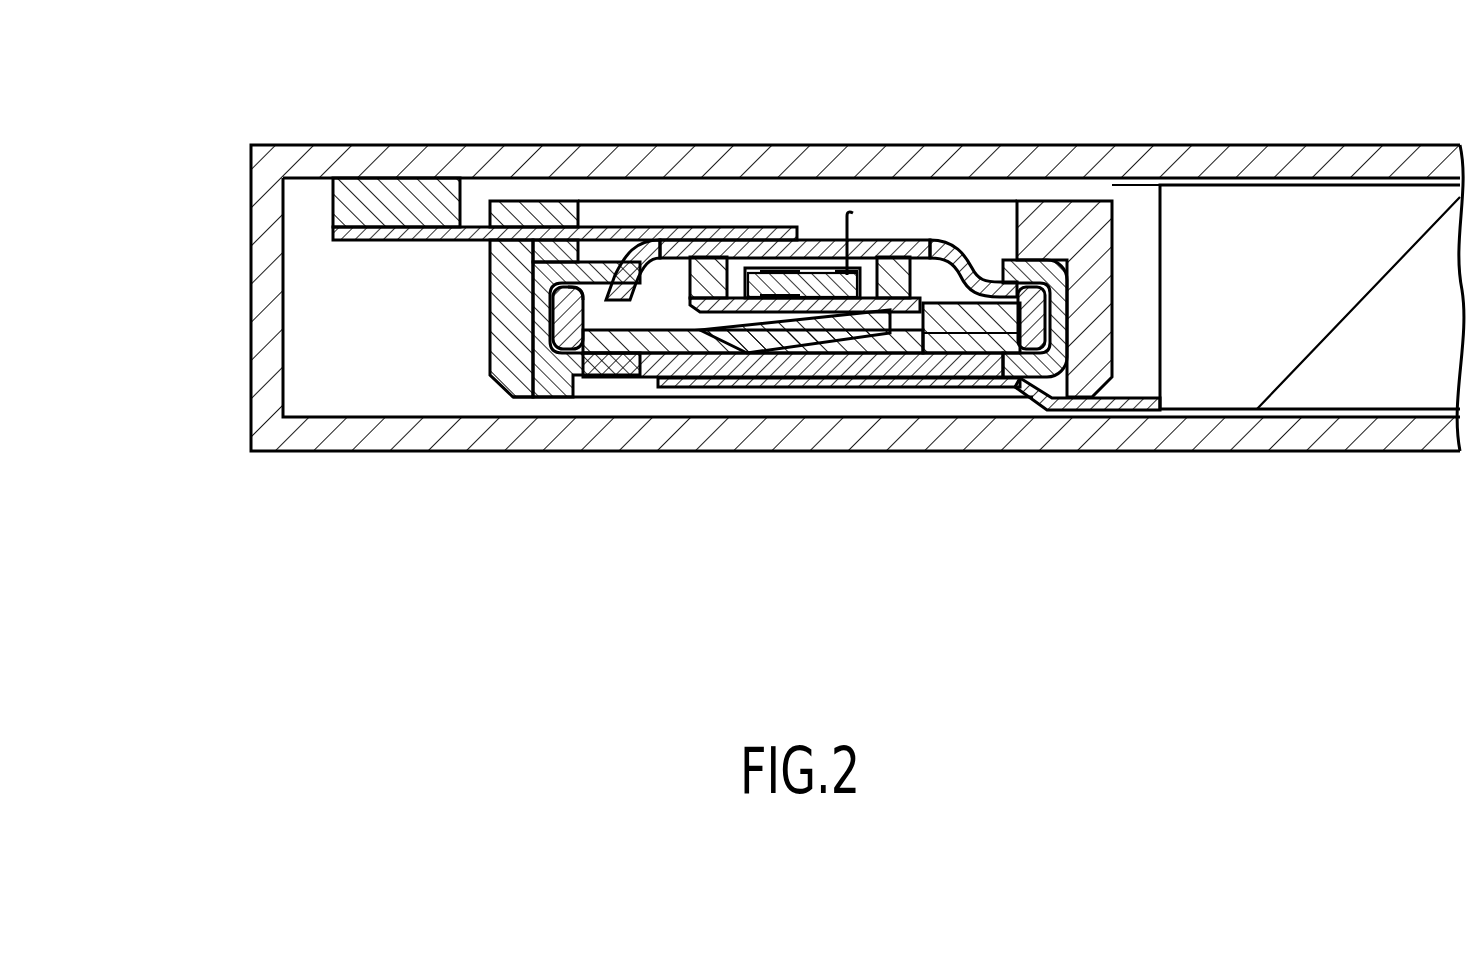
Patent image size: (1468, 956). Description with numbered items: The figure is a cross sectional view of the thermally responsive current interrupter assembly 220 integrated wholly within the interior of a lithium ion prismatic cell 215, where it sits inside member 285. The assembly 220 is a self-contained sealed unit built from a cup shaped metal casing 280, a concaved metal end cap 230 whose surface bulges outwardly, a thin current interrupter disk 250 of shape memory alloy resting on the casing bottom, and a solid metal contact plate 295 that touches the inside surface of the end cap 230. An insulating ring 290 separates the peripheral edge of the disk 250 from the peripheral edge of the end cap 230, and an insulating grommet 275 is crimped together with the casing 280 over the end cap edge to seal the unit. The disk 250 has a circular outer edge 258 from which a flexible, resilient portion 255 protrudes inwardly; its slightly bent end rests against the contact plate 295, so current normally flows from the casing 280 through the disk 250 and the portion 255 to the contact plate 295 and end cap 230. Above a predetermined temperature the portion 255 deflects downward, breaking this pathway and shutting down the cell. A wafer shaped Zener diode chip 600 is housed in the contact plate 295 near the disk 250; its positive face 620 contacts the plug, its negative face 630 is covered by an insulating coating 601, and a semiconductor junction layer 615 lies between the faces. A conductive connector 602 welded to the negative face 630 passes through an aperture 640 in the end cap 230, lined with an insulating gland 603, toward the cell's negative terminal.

The lithium ion prismatic cell 215 is at (1132, 144).
The current interrupter assembly 220 is at (632, 240).
The end cap 230 is at (980, 275).
The current interrupter disk 250 is at (650, 345).
The flexible resilient portion 255 is at (925, 345).
The outer edge of disk 258 is at (1050, 400).
The insulating grommet 275 is at (565, 302).
The casing 280 is at (560, 385).
The member 285 is at (498, 323).
The insulating ring 290 is at (573, 320).
The contact plate 295 is at (957, 256).
The Zener diode chip 600 is at (840, 292).
The insulating coating 601 is at (755, 265).
The conductive connector 602 is at (860, 265).
The electrical insulating gland 603 is at (838, 240).
The semiconductor junction layer 615 is at (790, 265).
The positive face 620 is at (835, 345).
The negative face 630 is at (785, 268).
The aperture 640 is at (930, 255).